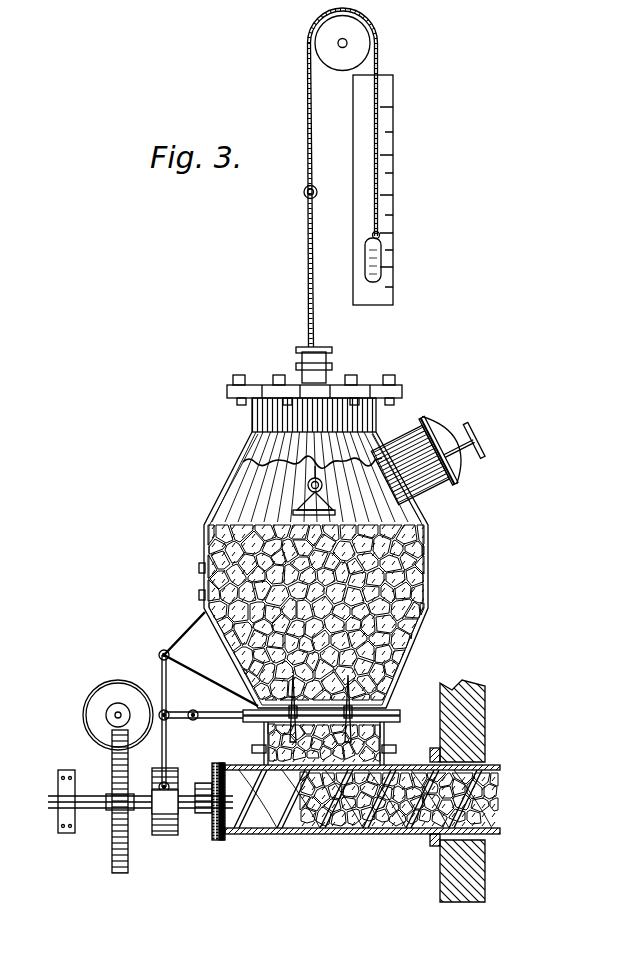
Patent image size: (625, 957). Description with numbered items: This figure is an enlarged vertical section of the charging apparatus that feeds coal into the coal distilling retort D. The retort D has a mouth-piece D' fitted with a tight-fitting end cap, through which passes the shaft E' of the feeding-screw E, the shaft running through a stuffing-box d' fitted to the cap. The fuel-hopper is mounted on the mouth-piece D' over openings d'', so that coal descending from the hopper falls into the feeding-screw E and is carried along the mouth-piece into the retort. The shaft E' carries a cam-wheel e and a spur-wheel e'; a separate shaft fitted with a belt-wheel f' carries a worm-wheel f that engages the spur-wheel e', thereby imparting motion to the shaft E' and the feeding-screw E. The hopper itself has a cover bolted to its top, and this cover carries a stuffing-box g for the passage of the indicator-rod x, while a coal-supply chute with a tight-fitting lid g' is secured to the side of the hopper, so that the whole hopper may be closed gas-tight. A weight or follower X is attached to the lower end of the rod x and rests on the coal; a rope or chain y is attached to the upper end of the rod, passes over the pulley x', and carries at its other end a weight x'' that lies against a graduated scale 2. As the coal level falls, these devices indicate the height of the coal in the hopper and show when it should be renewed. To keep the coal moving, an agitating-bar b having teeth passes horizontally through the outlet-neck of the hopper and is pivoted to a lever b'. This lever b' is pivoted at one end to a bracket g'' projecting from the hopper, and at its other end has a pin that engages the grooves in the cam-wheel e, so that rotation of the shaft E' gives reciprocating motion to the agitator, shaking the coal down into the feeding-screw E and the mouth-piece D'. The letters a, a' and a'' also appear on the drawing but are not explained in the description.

The pulley x' is at (342, 43).
The rope or chain y is at (343, 122).
The indicator-rod x is at (300, 195).
The graduated scale 2 is at (381, 190).
The weight x'' is at (398, 257).
The stuffing-box g is at (302, 365).
The top flange of vessel a' is at (301, 388).
The vessel body a is at (297, 553).
The weight or follower X is at (337, 492).
The tight-fitting lid g' is at (429, 455).
The nozzle cover a'' is at (447, 475).
The agitating-bar b is at (324, 719).
The bracket g'' is at (211, 659).
The lever b' is at (201, 721).
The belt-wheel f' is at (117, 705).
The worm-wheel f is at (92, 724).
The shaft of the feeding-screw E' is at (132, 804).
The spur-wheel e' is at (140, 796).
The cam-wheel e is at (169, 786).
The stuffing-box d' is at (197, 820).
The opening d'' is at (231, 788).
The feeding-screw E is at (359, 817).
The mouth-piece D' is at (399, 824).
The coal distilling retort D is at (475, 791).